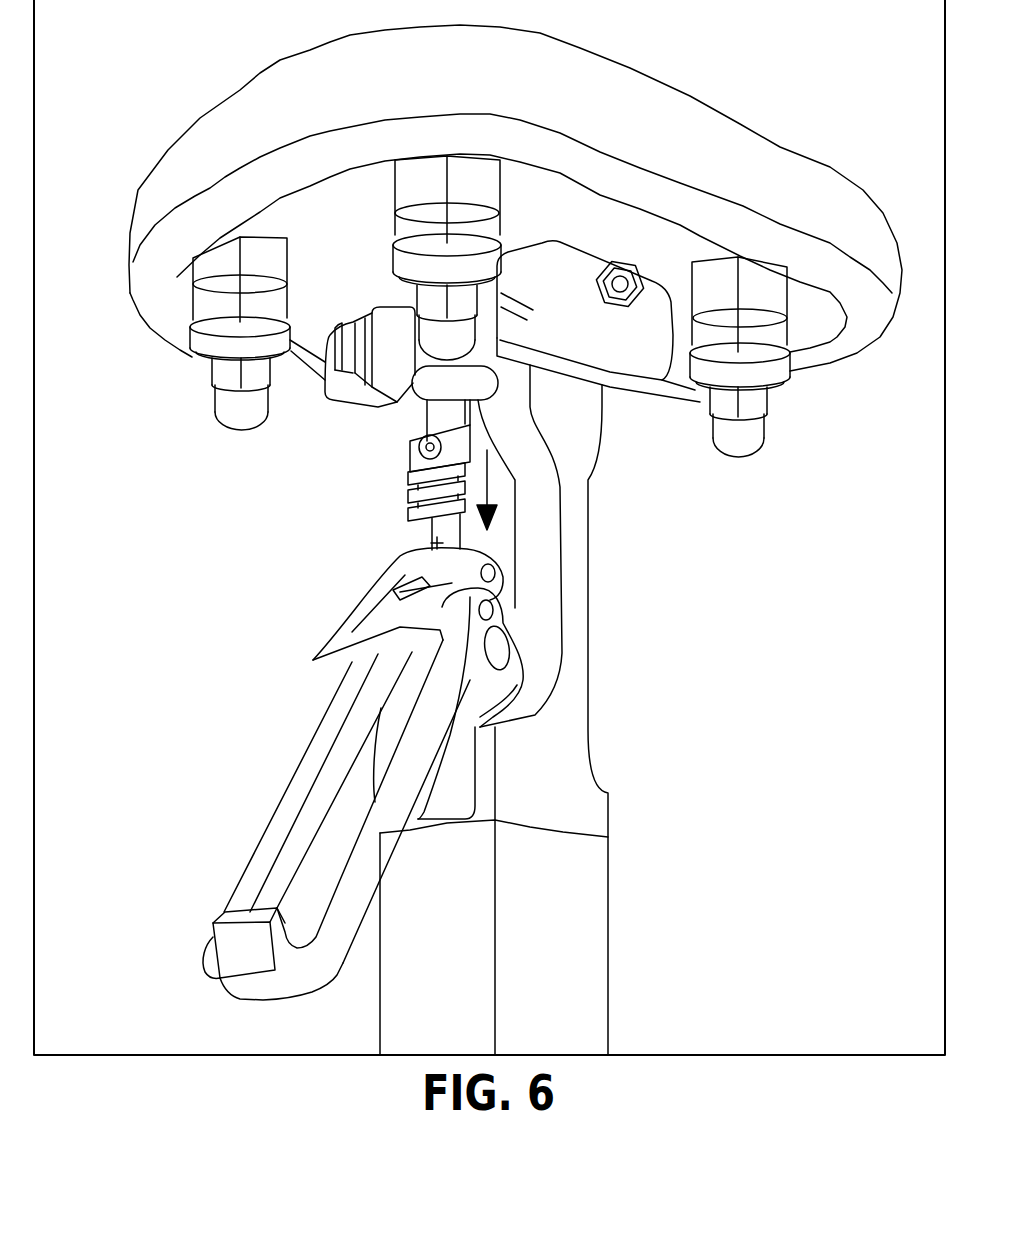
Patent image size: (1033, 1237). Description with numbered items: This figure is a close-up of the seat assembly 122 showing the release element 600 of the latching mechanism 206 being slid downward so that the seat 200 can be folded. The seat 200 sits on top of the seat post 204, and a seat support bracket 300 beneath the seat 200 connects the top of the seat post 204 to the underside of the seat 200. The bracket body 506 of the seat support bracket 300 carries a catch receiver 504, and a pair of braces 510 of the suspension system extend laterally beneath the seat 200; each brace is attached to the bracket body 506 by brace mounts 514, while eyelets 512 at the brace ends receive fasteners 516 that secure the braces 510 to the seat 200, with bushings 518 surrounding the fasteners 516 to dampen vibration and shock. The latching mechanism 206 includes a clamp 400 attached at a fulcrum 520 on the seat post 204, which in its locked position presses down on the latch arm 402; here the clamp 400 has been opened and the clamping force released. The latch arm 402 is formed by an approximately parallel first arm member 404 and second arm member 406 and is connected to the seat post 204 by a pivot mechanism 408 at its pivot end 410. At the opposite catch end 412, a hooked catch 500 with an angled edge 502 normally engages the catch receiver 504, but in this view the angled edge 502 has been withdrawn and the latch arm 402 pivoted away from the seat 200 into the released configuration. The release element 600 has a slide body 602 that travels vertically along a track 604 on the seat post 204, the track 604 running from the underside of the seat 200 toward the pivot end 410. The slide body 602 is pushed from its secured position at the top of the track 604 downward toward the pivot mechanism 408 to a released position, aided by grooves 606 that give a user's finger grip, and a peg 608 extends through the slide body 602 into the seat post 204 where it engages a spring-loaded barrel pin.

The seat assembly 122 is at (185, 71).
The seat 200 is at (750, 150).
The seat post 204 is at (610, 887).
The latching mechanism 206 is at (210, 784).
The seat support bracket 300 is at (686, 436).
The clamp 400 is at (348, 640).
The latch arm 402 is at (348, 937).
The first arm member 404 is at (380, 860).
The second arm member 406 is at (307, 778).
The pivot mechanism 408 is at (493, 610).
The pivot end 410 is at (545, 701).
The catch end 412 is at (171, 980).
The hooked catch 500 is at (273, 1000).
The angled edge 502 is at (267, 908).
The catch receiver 504 is at (427, 387).
The bracket body 506 is at (608, 365).
The pair of braces 510 is at (307, 358).
The eyelets 512 is at (210, 337).
The brace mounts 514 is at (552, 255).
The fasteners 516 is at (250, 417).
The bushings 518 is at (170, 303).
The fulcrum 520 is at (496, 572).
The release element 600 is at (308, 537).
The slide body 602 is at (412, 478).
The track 604 is at (488, 604).
The grooves 606 is at (423, 512).
The peg 608 is at (420, 445).